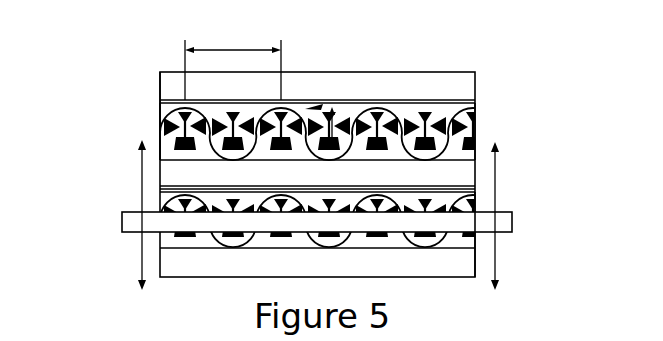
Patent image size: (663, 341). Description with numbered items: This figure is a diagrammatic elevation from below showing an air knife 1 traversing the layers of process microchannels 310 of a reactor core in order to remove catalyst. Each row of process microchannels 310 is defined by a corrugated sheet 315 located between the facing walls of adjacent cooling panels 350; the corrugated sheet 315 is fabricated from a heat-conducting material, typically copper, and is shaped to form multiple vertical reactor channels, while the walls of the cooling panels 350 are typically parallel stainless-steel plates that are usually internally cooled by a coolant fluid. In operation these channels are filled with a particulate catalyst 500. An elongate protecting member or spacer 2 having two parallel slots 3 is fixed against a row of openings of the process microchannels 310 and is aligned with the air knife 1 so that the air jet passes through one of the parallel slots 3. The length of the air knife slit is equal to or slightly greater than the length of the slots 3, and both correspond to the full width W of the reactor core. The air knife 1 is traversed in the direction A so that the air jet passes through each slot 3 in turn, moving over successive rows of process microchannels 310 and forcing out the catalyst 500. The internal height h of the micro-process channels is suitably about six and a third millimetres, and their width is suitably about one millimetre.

The air knife 1 is at (122, 215).
The protecting member or spacer 2 is at (157, 111).
The parallel slots 3 is at (467, 148).
The process microchannels 310 is at (310, 108).
The corrugated sheet 315 is at (473, 128).
The catalyst 500 is at (167, 134).
The cooling panels 350 is at (530, 335).
The full width of the reactor cores W is at (233, 60).
The internal height of the micro-process channels h is at (345, 113).
The direction of traverse A is at (142, 252).